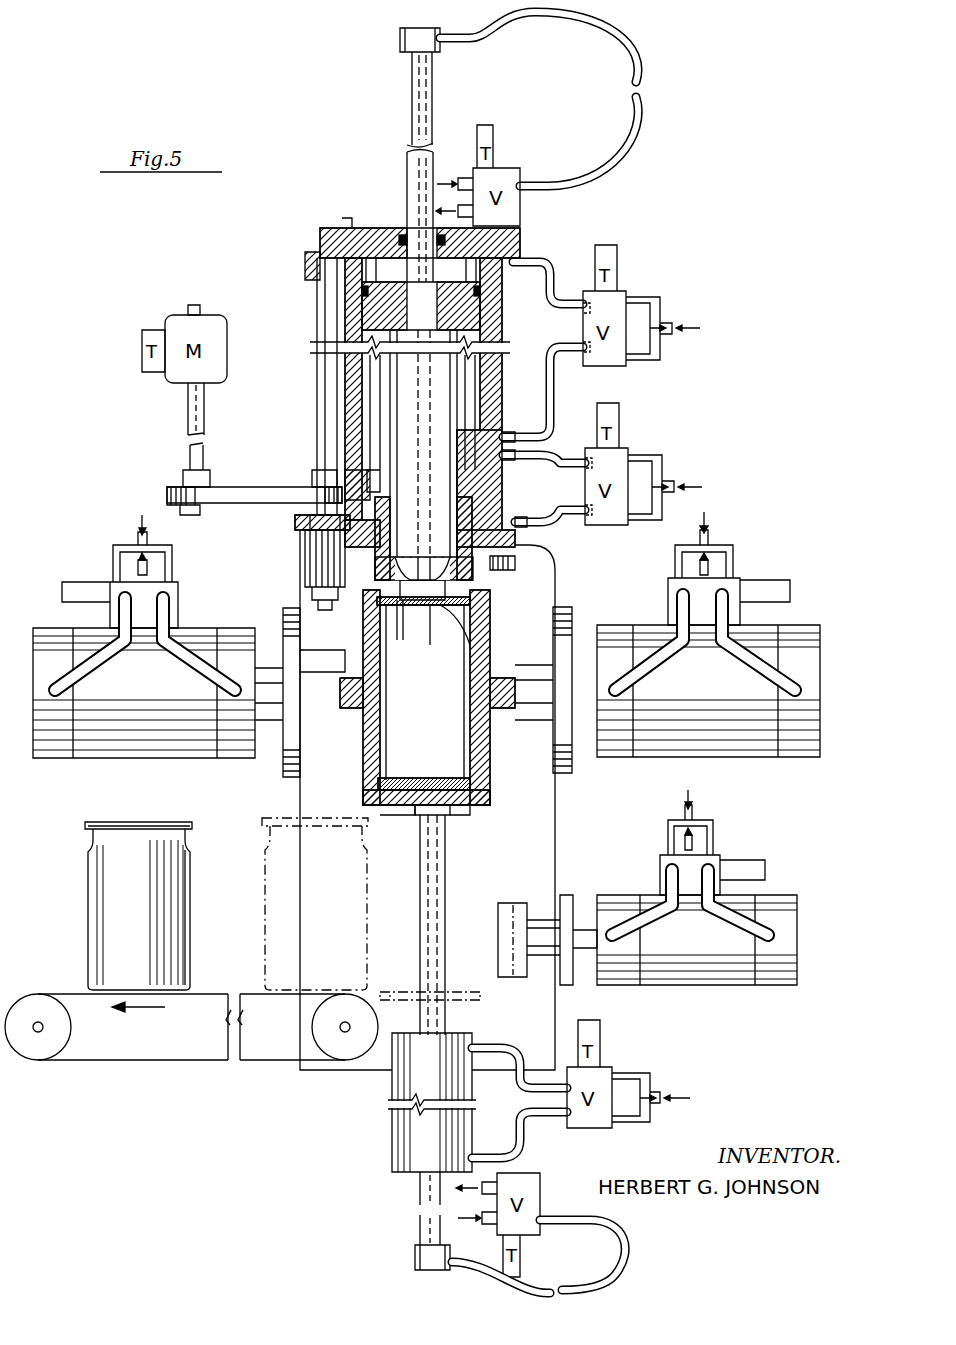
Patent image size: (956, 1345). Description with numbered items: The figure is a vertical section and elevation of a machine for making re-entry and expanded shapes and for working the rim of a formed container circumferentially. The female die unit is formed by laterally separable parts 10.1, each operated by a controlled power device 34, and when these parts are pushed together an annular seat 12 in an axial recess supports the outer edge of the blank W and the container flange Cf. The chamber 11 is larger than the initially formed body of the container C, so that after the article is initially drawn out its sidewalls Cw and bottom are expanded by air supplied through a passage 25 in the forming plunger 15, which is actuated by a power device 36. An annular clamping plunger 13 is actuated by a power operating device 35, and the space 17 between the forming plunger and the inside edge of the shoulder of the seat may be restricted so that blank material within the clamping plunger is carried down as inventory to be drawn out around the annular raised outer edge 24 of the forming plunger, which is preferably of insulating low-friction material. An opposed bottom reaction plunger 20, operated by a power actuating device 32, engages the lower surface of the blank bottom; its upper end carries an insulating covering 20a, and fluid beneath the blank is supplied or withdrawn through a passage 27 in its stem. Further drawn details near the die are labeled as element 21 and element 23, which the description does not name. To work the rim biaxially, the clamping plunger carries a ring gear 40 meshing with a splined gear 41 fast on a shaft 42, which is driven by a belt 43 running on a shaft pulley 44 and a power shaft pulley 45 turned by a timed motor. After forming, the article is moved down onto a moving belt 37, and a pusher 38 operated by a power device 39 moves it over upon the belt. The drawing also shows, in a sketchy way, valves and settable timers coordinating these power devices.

The laterally separable die part 10.1 is at (370, 745).
The chamber 11 is at (466, 702).
The annular seat 12 is at (402, 606).
The annular clamping plunger 13 is at (470, 580).
The forming plunger 15 is at (419, 422).
The space 17 is at (490, 618).
The bottom reaction plunger 20 is at (468, 805).
The insulating covering 20a is at (400, 778).
The retaining ring 21 is at (480, 800).
The passage 23 is at (432, 618).
The annular raised outer edge 24 is at (378, 590).
The passage 25 is at (398, 315).
The passage 27 is at (440, 815).
The power actuating device 32 is at (392, 1150).
The controlled power device 34 is at (158, 699).
The power operating device 35 is at (358, 482).
The power device 36 is at (356, 384).
The moving belt 37 is at (72, 994).
The pusher 38 is at (514, 980).
The power device 39 is at (700, 985).
The ring gear 40 is at (516, 563).
The splined gear 41 is at (305, 560).
The shaft 42 is at (316, 366).
The belt 43 is at (262, 503).
The shaft pulley 44 is at (313, 480).
The power shaft pulley 45 is at (172, 488).
The container C is at (88, 922).
The container flange Cf is at (170, 822).
The container sidewall Cw is at (190, 922).
The blank W is at (470, 612).